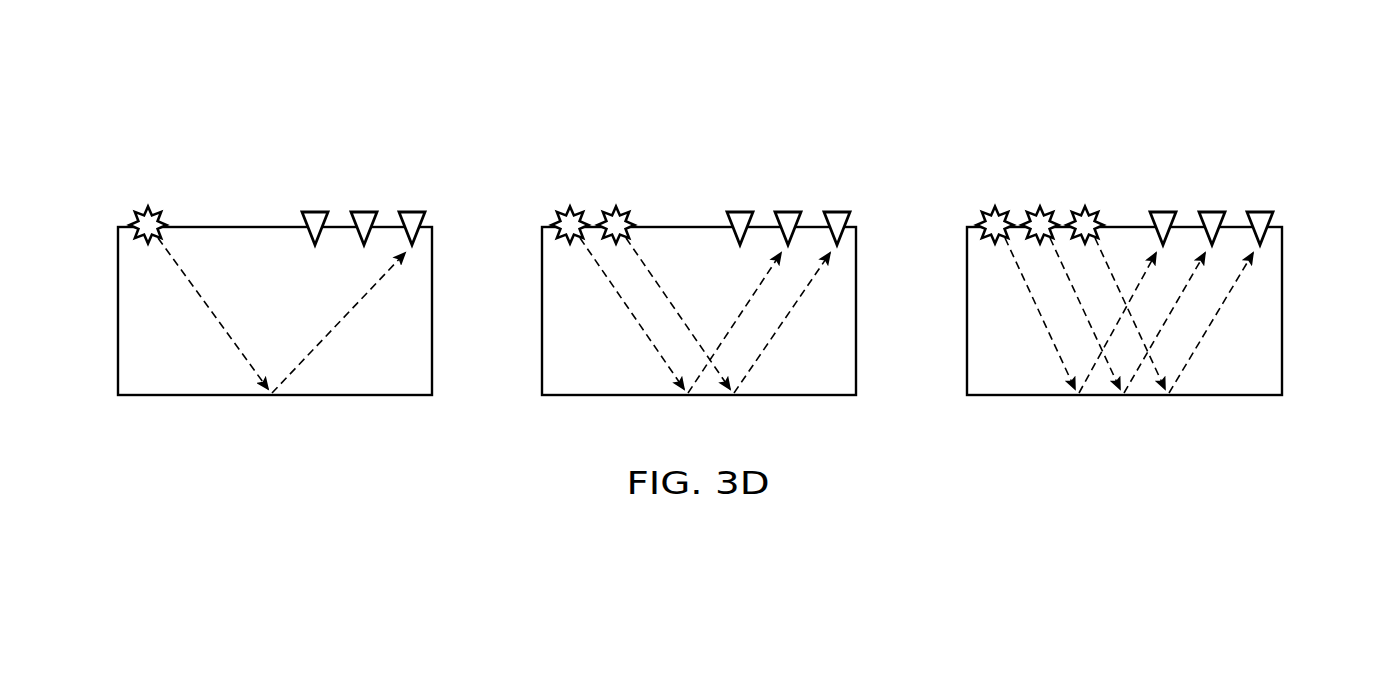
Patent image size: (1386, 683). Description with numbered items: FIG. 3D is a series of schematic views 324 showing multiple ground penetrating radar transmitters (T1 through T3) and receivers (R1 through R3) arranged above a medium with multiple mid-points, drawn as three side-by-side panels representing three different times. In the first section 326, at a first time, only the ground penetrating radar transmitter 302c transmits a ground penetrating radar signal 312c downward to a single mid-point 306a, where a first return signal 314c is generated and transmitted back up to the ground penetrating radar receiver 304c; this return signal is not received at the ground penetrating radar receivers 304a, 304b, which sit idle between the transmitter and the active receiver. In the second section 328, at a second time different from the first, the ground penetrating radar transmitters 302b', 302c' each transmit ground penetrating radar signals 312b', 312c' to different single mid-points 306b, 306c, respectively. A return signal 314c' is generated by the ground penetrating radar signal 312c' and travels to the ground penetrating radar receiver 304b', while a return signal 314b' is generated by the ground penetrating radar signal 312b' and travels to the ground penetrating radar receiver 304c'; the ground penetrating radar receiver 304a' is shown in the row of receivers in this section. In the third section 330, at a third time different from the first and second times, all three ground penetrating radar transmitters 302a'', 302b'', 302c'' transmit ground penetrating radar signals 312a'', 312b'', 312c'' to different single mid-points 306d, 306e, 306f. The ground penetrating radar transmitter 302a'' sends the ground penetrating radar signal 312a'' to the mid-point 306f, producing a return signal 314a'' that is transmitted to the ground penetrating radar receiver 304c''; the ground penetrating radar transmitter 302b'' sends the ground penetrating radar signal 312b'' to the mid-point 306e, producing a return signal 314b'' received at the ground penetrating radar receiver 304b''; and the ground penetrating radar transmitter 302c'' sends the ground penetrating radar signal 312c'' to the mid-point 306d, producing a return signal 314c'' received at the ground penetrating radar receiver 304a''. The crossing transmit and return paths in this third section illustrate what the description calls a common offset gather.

The series of schematic views 324 is at (503, 82).
The section 326 is at (104, 398).
The section 328 is at (529, 395).
The section 330 is at (1293, 396).
The ground penetrating radar transmitter 302c is at (108, 212).
The ground penetrating radar receiver 304a is at (270, 211).
The ground penetrating radar receiver 304b is at (350, 188).
The ground penetrating radar receiver 304c is at (452, 214).
The ground penetrating radar signal 312c is at (203, 313).
The first return signal 314c is at (341, 323).
The mid-point 306a is at (268, 404).
The ground penetrating radar transmitter 302c' is at (551, 196).
The ground penetrating radar transmitter 302b' is at (613, 182).
The ground penetrating radar receiver 304a' is at (717, 196).
The ground penetrating radar receiver 304b' is at (797, 188).
The ground penetrating radar receiver 304c' is at (879, 214).
The ground penetrating radar signal 312c' is at (616, 313).
The ground penetrating radar signal 312b' is at (647, 313).
The return signal 314b' is at (768, 323).
The return signal 314c' is at (785, 323).
The mid-point 306b is at (682, 403).
The mid-point 306c is at (738, 403).
The ground penetrating radar transmitter 302c'' is at (974, 196).
The ground penetrating radar transmitter 302b'' is at (1038, 181).
The ground penetrating radar transmitter 302a'' is at (1104, 197).
The ground penetrating radar receiver 304a'' is at (1157, 179).
The ground penetrating radar receiver 304b'' is at (1233, 191).
The ground penetrating radar receiver 304c'' is at (1304, 214).
The ground penetrating radar signal 312c'' is at (977, 313).
The ground penetrating radar signal 312b'' is at (1045, 313).
The ground penetrating radar signal 312a'' is at (1070, 313).
The return signal 314c'' is at (1174, 323).
The return signal 314b'' is at (1200, 323).
The return signal 314a'' is at (1270, 323).
The mid-point 306d is at (1073, 403).
The mid-point 306e is at (1123, 403).
The mid-point 306f is at (1177, 403).